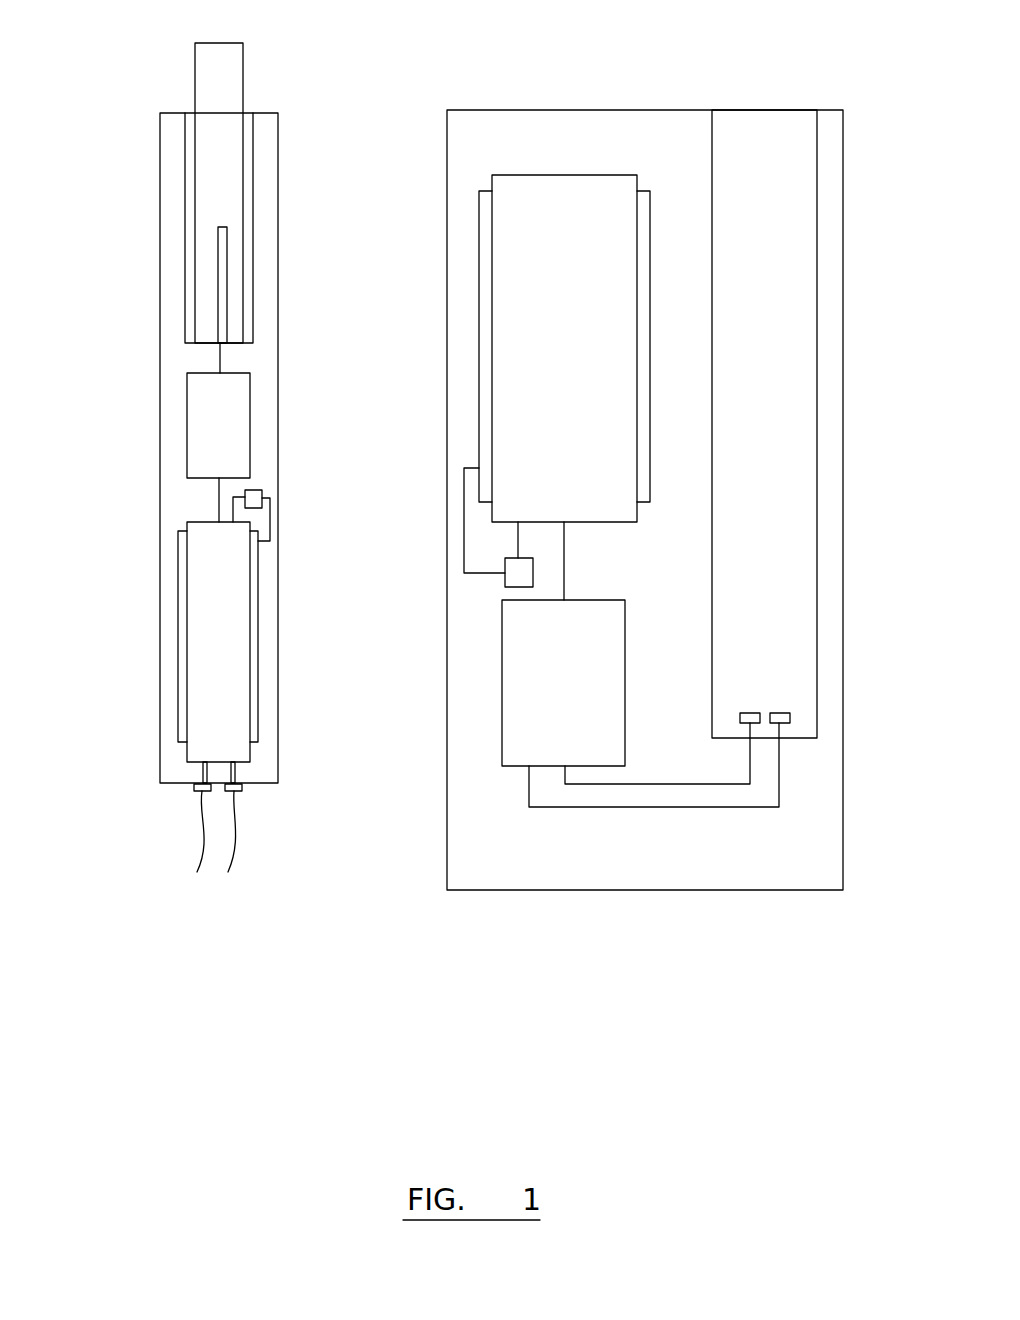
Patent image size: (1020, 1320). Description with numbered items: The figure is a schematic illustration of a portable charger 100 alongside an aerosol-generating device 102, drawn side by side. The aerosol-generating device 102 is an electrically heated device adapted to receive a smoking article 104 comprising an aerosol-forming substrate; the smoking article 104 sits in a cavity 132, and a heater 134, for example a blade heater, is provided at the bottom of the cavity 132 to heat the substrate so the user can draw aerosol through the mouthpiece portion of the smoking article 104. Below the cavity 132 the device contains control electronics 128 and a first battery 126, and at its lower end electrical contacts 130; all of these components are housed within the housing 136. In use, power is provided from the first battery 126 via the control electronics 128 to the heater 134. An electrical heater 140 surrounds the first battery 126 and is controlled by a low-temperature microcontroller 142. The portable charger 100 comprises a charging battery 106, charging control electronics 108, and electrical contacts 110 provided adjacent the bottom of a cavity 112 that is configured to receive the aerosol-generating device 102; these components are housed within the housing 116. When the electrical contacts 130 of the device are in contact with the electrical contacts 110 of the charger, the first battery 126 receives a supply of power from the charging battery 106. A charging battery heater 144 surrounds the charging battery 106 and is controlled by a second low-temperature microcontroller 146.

The portable charger 100 is at (649, 573).
The aerosol-generating device 102 is at (219, 450).
The smoking article 104 is at (241, 73).
The charging battery 106 is at (540, 375).
The charging control electronics 108 is at (545, 683).
The electrical contacts 110 is at (750, 713).
The cavity 112 is at (777, 388).
The housing 116 is at (843, 803).
The first battery 126 is at (222, 645).
The control electronics 128 is at (222, 422).
The electrical contacts 130 is at (218, 842).
The cavity 132 is at (247, 202).
The heater 134 is at (245, 272).
The housing 136 is at (160, 505).
The electrical heater 140 is at (260, 570).
The low-temperature microcontroller 142 is at (262, 492).
The charging battery heater 144 is at (480, 218).
The second low-temperature microcontroller 146 is at (505, 585).